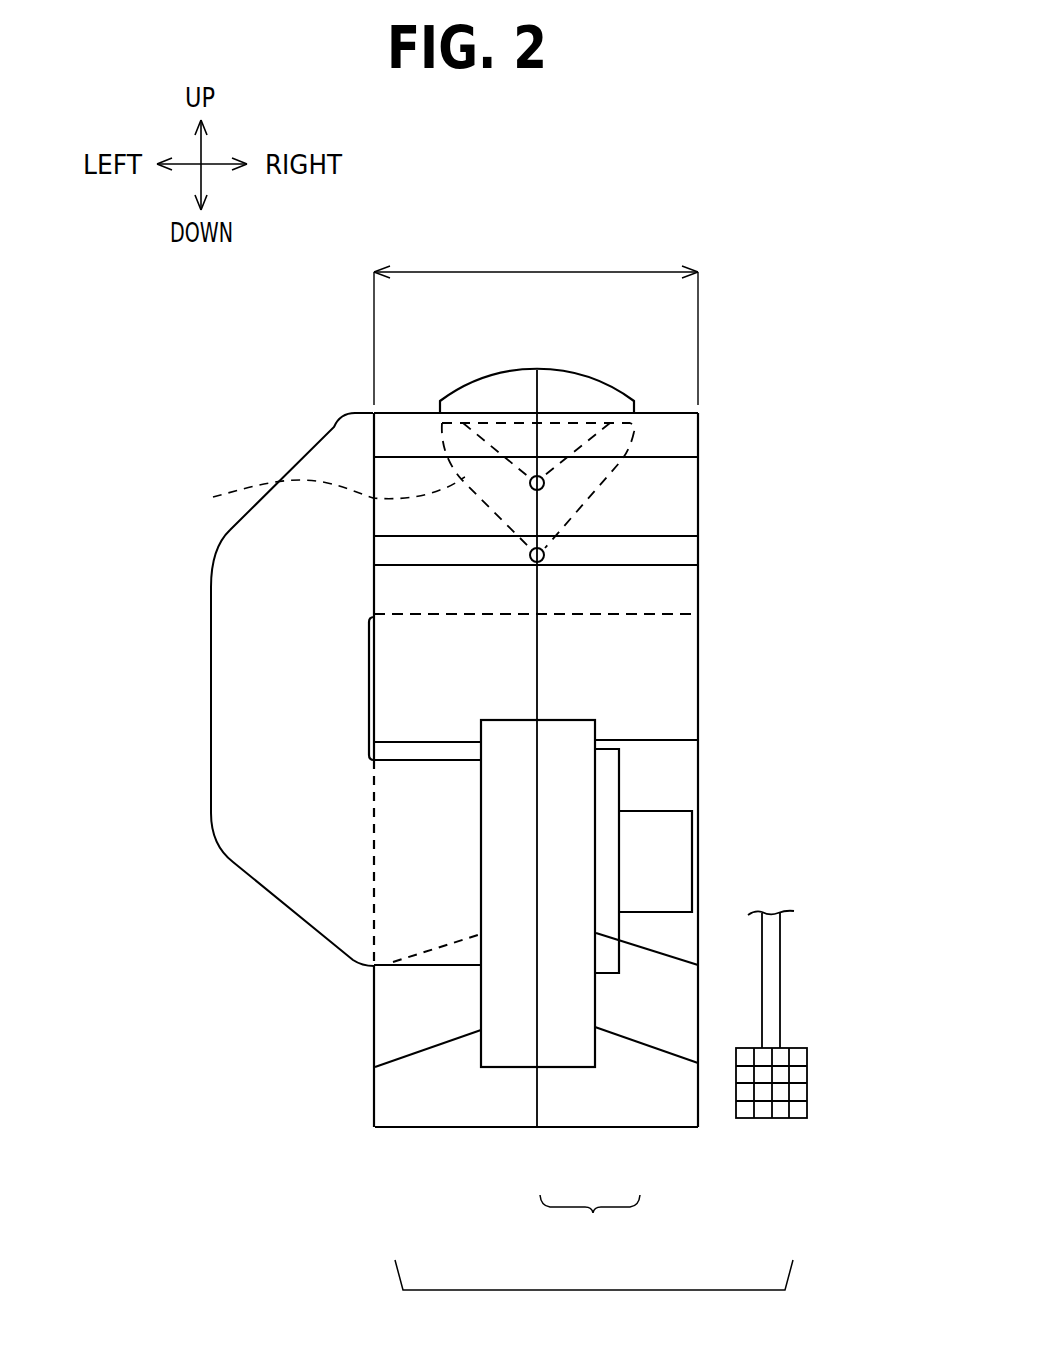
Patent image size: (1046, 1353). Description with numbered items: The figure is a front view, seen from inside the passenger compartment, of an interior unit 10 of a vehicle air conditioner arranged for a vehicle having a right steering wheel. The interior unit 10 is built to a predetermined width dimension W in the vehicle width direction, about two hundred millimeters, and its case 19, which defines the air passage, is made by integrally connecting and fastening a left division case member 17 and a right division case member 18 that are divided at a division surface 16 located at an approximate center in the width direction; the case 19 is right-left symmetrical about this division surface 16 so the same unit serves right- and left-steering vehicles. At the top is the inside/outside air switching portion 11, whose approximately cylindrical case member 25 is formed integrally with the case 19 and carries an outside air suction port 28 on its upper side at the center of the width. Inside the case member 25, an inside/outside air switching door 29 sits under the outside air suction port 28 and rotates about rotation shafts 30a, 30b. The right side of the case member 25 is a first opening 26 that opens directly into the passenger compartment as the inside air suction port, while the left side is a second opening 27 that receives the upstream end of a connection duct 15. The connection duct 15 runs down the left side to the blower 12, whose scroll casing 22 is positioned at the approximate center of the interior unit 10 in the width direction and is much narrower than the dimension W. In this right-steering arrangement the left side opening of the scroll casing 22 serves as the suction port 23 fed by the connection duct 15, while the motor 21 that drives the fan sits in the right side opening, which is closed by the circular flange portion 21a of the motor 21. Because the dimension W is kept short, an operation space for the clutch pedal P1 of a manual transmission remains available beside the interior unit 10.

The interior unit 10 is at (708, 665).
The inside/outside air switching portion 11 is at (582, 477).
The blower 12 is at (504, 997).
The connection duct 15 is at (313, 448).
The division surface 16 is at (538, 1095).
The left division case member 17 is at (527, 1128).
The right division case member 18 is at (613, 1128).
The case 19 is at (590, 1224).
The motor 21 is at (658, 810).
The flange portion 21a is at (610, 772).
The scroll casing 22 is at (512, 977).
The suction port 23 is at (481, 857).
The case member 25 is at (665, 410).
The first opening 26 is at (699, 517).
The second opening 27 is at (373, 518).
The outside air suction port 28 is at (507, 397).
The inside/outside air switching door 29 is at (319, 496).
The rotation shaft 30a is at (537, 476).
The rotation shaft 30b is at (544, 555).
The clutch pedal P1 is at (782, 1089).
The width dimension W is at (536, 318).